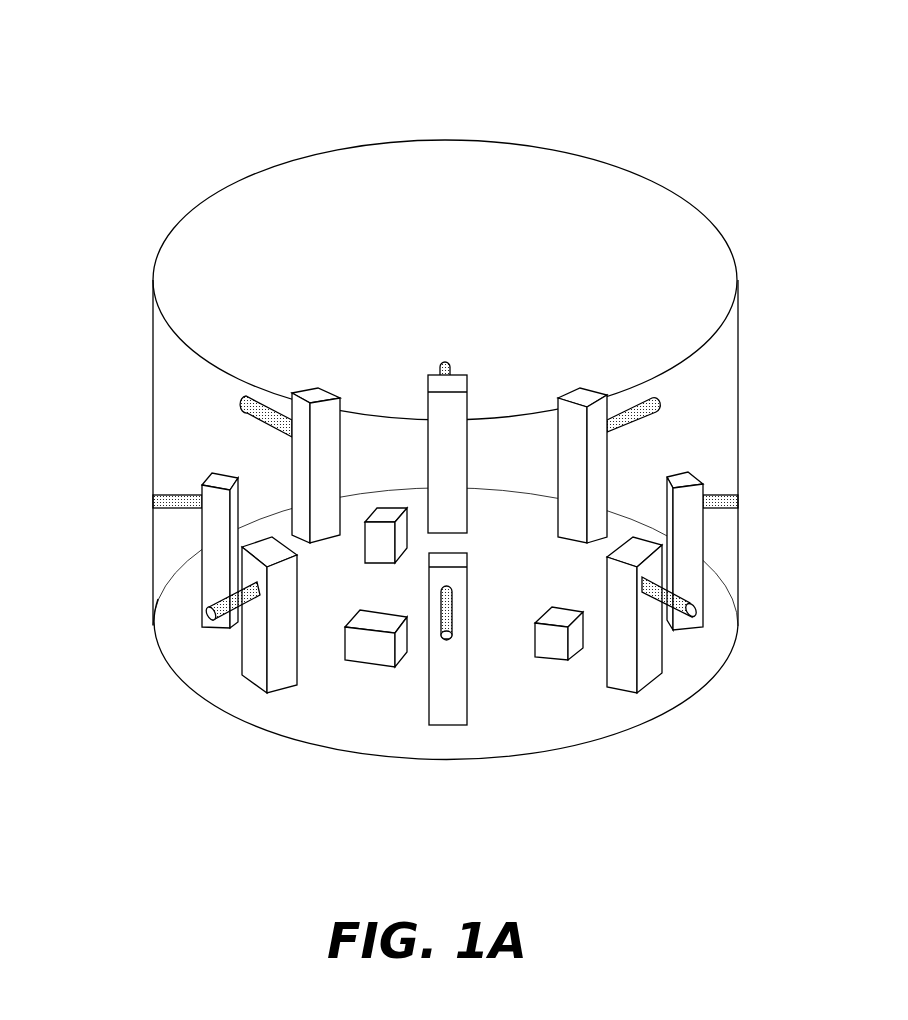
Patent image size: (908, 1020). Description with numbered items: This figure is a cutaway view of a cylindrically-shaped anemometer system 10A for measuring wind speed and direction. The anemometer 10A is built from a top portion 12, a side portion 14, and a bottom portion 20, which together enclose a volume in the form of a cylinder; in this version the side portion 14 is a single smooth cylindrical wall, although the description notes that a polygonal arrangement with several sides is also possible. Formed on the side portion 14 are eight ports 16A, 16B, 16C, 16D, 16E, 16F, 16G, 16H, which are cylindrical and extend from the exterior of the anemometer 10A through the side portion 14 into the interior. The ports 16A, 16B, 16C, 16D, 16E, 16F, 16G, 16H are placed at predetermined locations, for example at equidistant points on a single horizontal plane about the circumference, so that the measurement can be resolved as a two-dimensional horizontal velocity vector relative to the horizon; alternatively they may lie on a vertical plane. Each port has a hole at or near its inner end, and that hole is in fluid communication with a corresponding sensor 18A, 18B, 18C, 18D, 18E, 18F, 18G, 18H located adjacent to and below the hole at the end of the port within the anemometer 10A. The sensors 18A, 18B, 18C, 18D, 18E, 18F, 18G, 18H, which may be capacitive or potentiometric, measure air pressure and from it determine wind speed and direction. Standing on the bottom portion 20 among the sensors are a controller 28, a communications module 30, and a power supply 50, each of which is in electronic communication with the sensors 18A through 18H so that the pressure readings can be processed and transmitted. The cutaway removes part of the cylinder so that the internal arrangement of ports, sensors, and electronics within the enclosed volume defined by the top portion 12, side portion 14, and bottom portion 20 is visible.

The anemometer system 10A is at (716, 122).
The top portion 12 is at (315, 220).
The side portion 14 is at (318, 728).
The bottom portion 20 is at (540, 762).
The port 16A is at (738, 500).
The port 16B is at (657, 408).
The port 16C is at (456, 367).
The port 16D is at (240, 398).
The port 16E is at (153, 500).
The port 16F is at (213, 614).
The port 16G is at (455, 617).
The port 16H is at (692, 605).
The sensor 18A is at (703, 548).
The sensor 18B is at (607, 473).
The sensor 18C is at (468, 405).
The sensor 18D is at (303, 483).
The sensor 18E is at (200, 578).
The sensor 18F is at (255, 687).
The sensor 18G is at (445, 727).
The sensor 18H is at (622, 693).
The controller 28 is at (373, 660).
The communications module 30 is at (390, 507).
The power supply 50 is at (565, 657).